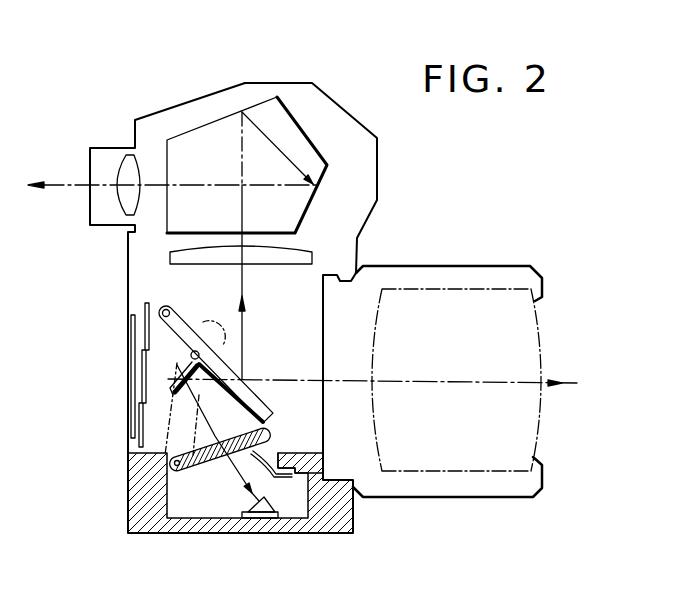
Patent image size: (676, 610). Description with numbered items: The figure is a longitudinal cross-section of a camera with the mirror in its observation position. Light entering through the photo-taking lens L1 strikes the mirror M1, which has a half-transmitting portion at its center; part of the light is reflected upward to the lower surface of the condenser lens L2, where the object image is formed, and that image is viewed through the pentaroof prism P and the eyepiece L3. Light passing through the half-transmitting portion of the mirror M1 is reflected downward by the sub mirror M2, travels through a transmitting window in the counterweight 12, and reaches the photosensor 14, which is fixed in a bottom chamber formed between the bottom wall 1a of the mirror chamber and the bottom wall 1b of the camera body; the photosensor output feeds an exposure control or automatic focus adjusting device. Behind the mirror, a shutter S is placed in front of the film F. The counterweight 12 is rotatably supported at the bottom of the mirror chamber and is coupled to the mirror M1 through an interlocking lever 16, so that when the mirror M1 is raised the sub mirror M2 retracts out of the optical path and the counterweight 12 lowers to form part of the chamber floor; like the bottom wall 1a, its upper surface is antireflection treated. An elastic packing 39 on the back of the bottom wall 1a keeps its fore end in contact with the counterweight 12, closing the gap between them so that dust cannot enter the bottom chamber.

The pentaroof prism P is at (263, 102).
The eyepiece L3 is at (128, 158).
The condenser lens L2 is at (281, 264).
The photo-taking lens L1 is at (463, 289).
The interlocking lever 16 is at (203, 322).
The mirror M1 is at (251, 397).
The sub mirror M2 is at (173, 369).
The film F is at (132, 325).
The shutter S is at (137, 446).
The counterweight 12 is at (266, 431).
The bottom wall of mirror chamber 1a is at (301, 455).
The bottom wall of camera body 1b is at (198, 523).
The photosensor 14 is at (253, 520).
The packing 39 is at (270, 468).